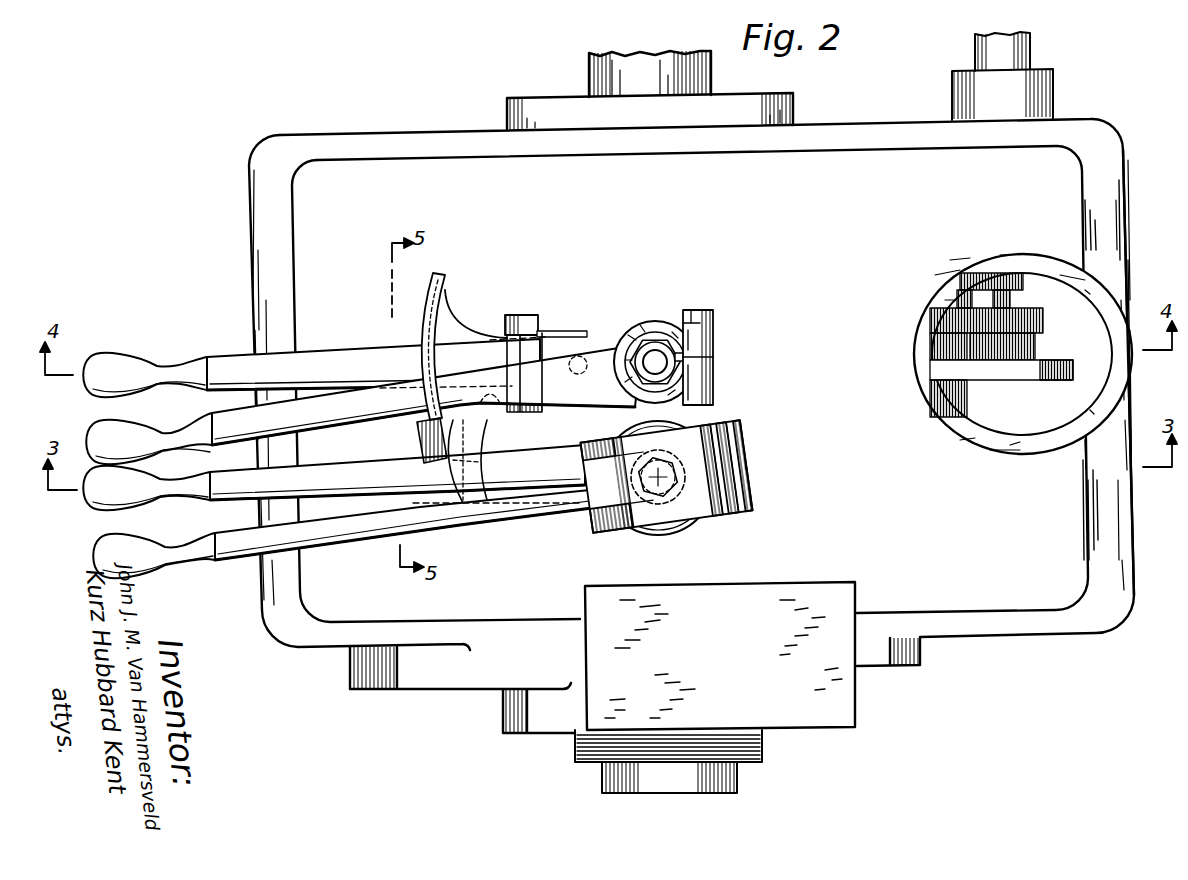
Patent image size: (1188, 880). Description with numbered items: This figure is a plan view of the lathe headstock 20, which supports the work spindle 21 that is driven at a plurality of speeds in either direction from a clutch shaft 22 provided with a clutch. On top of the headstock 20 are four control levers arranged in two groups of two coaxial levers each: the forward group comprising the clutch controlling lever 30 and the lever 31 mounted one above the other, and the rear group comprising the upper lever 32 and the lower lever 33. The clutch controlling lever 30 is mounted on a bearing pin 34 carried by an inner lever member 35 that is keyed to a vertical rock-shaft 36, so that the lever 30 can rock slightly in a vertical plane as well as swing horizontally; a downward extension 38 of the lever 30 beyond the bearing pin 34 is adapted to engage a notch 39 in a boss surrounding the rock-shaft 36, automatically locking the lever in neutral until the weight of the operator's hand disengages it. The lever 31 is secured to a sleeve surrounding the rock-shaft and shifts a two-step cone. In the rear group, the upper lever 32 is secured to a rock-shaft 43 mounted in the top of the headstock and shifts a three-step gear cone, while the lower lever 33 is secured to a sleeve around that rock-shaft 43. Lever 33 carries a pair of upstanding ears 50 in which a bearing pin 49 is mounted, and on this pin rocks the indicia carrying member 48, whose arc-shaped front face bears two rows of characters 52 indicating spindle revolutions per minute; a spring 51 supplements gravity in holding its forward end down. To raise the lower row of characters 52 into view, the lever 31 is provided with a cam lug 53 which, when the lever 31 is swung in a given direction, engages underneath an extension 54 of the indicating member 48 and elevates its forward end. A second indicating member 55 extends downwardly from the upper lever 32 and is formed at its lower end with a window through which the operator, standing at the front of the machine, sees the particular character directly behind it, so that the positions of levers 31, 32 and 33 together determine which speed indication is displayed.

The headstock 20 is at (970, 603).
The work spindle 21 is at (736, 777).
The clutch shaft 22 is at (1030, 48).
The clutch controlling lever 30 is at (345, 548).
The lever 31 is at (345, 472).
The upper lever of the rear pair 32 is at (345, 418).
The lower lever of the rear pair 33 is at (318, 365).
The bearing pin 34 is at (733, 510).
The inner lever member 35 is at (645, 514).
The rock-shaft 36 is at (676, 526).
The downward extension 38 is at (753, 470).
The notch 39 is at (748, 443).
The rock-shaft 43 is at (656, 360).
The indicia carrying member 48 is at (445, 330).
The bearing pin 49 is at (533, 318).
The upstanding ears 50 is at (513, 316).
The spring 51 is at (590, 340).
The characters 52 is at (420, 330).
The cam lug 53 is at (497, 465).
The extension 54 is at (455, 492).
The second indicating member 55 is at (412, 430).